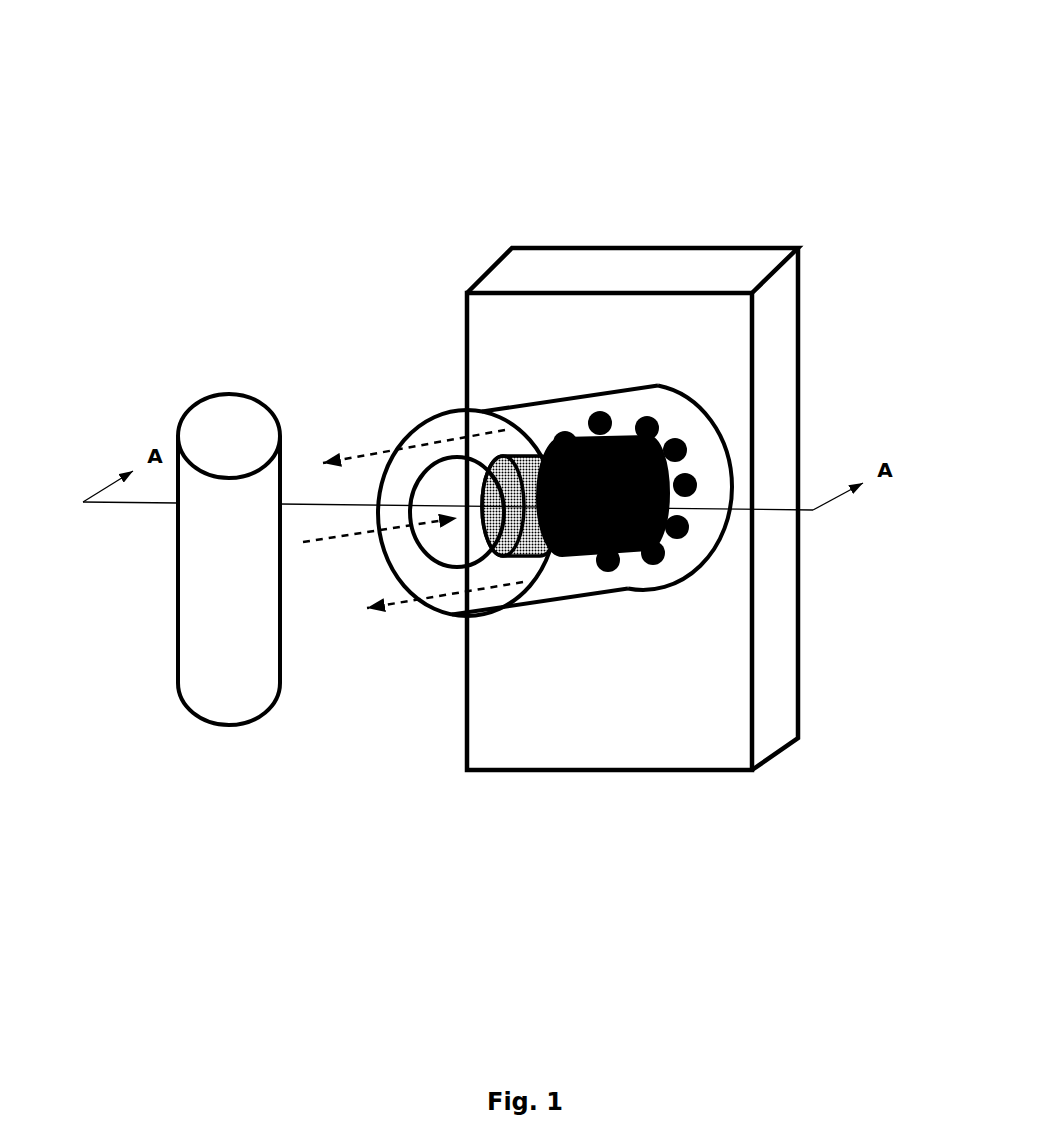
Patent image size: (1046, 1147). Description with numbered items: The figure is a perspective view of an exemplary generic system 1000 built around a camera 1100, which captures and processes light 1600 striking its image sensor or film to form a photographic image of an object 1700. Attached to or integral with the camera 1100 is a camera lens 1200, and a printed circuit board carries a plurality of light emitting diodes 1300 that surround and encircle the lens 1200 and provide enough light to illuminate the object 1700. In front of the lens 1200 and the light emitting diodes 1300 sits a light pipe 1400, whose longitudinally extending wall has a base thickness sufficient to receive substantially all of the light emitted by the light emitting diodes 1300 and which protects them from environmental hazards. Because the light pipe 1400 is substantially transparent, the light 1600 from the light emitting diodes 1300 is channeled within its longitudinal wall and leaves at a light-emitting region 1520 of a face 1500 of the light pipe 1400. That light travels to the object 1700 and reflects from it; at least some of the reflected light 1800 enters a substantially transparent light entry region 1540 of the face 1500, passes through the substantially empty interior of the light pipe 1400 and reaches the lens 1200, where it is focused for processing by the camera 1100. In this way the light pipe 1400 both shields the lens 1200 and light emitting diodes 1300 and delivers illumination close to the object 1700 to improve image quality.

The generic system 1000 is at (296, 42).
The camera 1100 is at (553, 243).
The camera lens 1200 is at (628, 472).
The light emitting diodes 1300 is at (709, 473).
The light pipe 1400 is at (721, 551).
The face 1500 is at (478, 620).
The light-emitting region 1520 is at (403, 480).
The light entry region 1540 is at (443, 543).
The light 1600 is at (358, 452).
The object 1700 is at (235, 625).
The reflected light 1800 is at (325, 548).